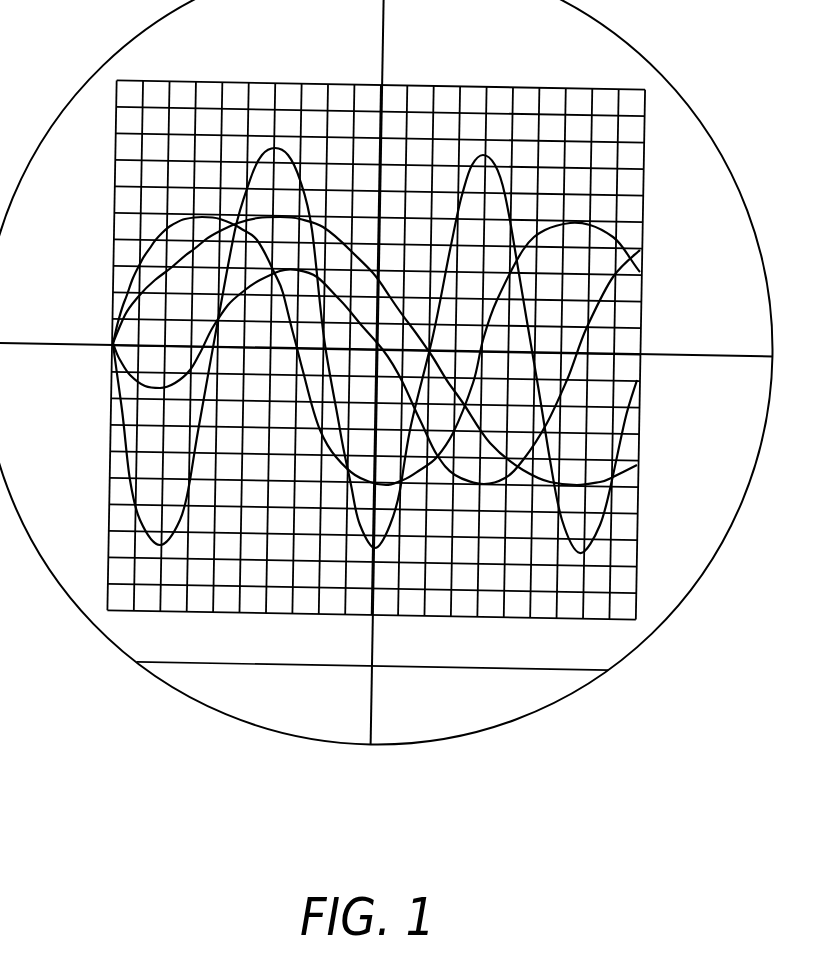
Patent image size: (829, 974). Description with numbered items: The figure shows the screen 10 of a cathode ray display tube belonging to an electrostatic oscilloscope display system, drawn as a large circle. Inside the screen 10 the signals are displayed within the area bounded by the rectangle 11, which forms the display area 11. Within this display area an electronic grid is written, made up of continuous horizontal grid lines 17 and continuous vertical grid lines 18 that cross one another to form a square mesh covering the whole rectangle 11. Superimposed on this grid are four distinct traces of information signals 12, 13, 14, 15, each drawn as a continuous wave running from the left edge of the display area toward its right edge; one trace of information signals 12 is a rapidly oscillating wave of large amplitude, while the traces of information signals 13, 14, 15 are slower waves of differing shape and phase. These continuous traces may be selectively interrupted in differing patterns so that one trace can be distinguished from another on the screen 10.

The screen 10 is at (647, 641).
The rectangle 11 is at (376, 344).
The information signal trace 12 is at (122, 486).
The information signal trace 13 is at (157, 237).
The information signal trace 14 is at (338, 285).
The information signal trace 15 is at (381, 290).
The horizontal grid lines 17 is at (376, 349).
The vertical grid lines 18 is at (172, 611).